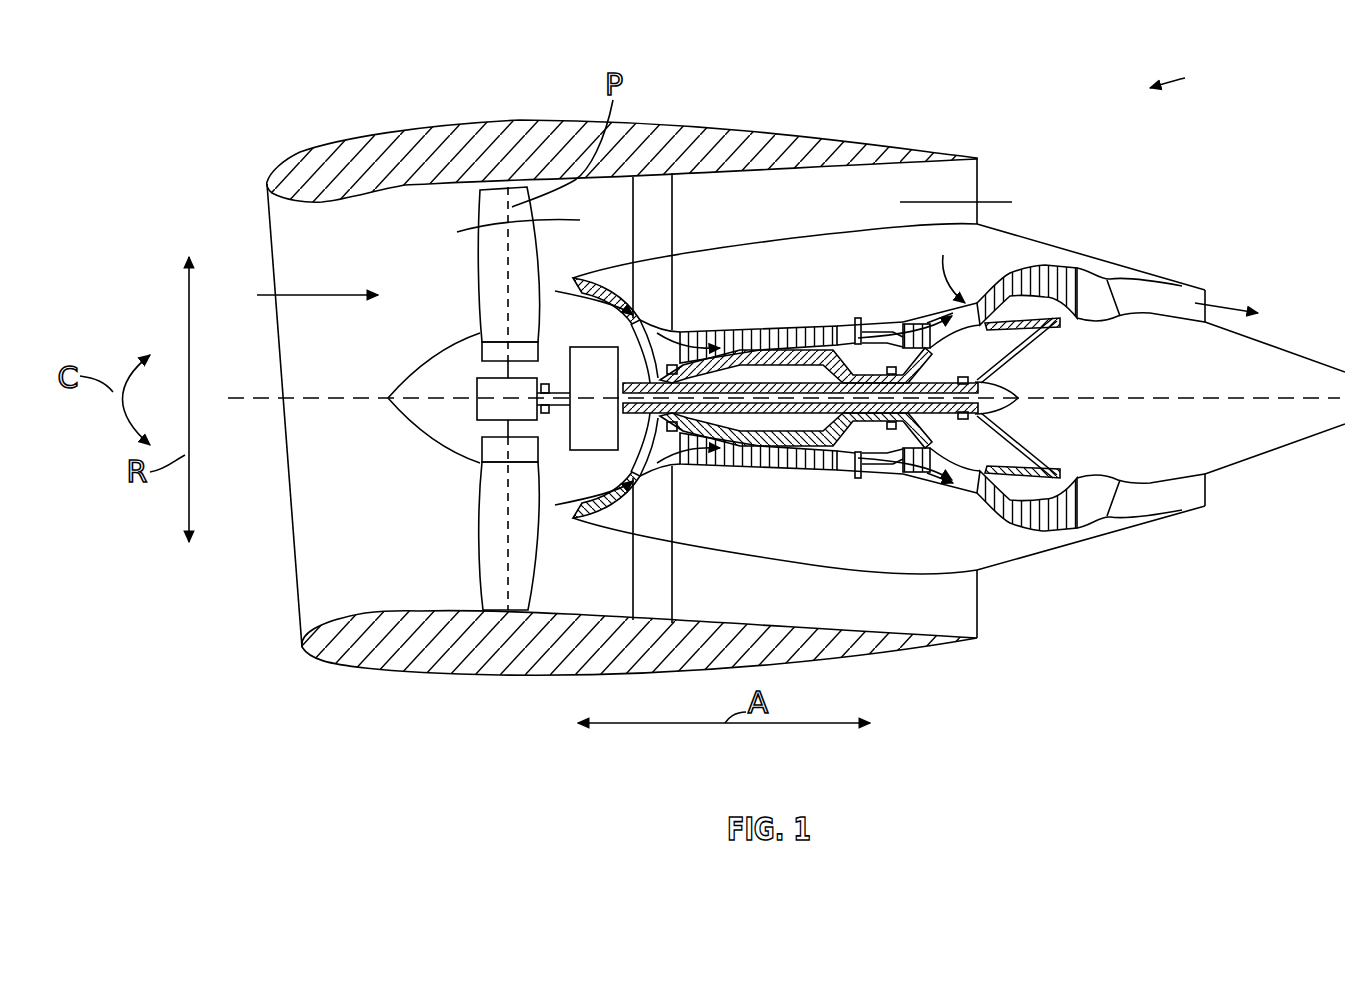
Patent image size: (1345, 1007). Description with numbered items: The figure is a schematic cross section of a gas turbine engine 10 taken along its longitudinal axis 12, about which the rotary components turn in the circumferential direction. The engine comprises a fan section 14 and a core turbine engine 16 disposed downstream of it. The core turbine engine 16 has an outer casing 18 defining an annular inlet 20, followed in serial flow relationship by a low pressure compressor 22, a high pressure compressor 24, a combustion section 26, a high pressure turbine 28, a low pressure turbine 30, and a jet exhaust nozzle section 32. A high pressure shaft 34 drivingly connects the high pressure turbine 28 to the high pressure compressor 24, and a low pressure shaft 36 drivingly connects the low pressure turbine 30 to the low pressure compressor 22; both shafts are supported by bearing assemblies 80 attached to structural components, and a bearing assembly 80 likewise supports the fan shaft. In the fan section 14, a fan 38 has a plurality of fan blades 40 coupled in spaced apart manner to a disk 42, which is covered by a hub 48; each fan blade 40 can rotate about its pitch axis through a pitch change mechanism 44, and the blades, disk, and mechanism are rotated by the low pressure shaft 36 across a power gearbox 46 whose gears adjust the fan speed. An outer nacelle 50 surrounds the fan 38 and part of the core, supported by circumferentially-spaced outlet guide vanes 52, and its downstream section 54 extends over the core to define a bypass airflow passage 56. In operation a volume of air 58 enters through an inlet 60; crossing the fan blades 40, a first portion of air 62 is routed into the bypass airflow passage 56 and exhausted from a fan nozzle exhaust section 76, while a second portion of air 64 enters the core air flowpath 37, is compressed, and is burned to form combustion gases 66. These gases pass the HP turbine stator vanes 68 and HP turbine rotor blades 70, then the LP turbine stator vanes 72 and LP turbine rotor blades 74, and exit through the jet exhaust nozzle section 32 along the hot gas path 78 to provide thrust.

The gas turbine engine 10 is at (1186, 71).
The longitudinal axis 12 is at (1118, 398).
The fan section 14 is at (390, 210).
The core turbine engine 16 is at (760, 275).
The outer casing 18 is at (807, 562).
The annular inlet 20 is at (580, 507).
The low pressure compressor 22 is at (640, 480).
The high pressure compressor 24 is at (723, 448).
The combustion section 26 is at (850, 465).
The high pressure turbine 28 is at (935, 470).
The low pressure turbine 30 is at (1063, 533).
The jet exhaust nozzle section 32 is at (1118, 515).
The high pressure shaft 34 is at (955, 413).
The low pressure shaft 36 is at (962, 377).
The core air flowpath 37 is at (675, 222).
The fan 38 is at (447, 457).
The fan blades 40 is at (473, 517).
The disk 42 is at (487, 350).
The pitch change mechanism 44 is at (477, 393).
The power gearbox 46 is at (640, 340).
The hub 48 is at (403, 422).
The outer nacelle 50 is at (495, 676).
The outlet guide vanes 52 is at (677, 222).
The downstream section 54 is at (922, 150).
The bypass airflow passage 56 is at (780, 196).
The volume of air 58 is at (307, 293).
The inlet 60 is at (293, 572).
The first portion of air 62 is at (473, 233).
The second portion of air 64 is at (573, 287).
The combustion gases 66 is at (1015, 285).
The HP turbine stator vanes 68 is at (893, 472).
The HP turbine rotor blades 70 is at (907, 475).
The LP turbine stator vanes 72 is at (985, 517).
The LP turbine rotor blades 74 is at (997, 527).
The fan nozzle exhaust section 76 is at (960, 184).
The hot gas path 78 is at (943, 262).
The bearing assemblies 80 is at (547, 377).